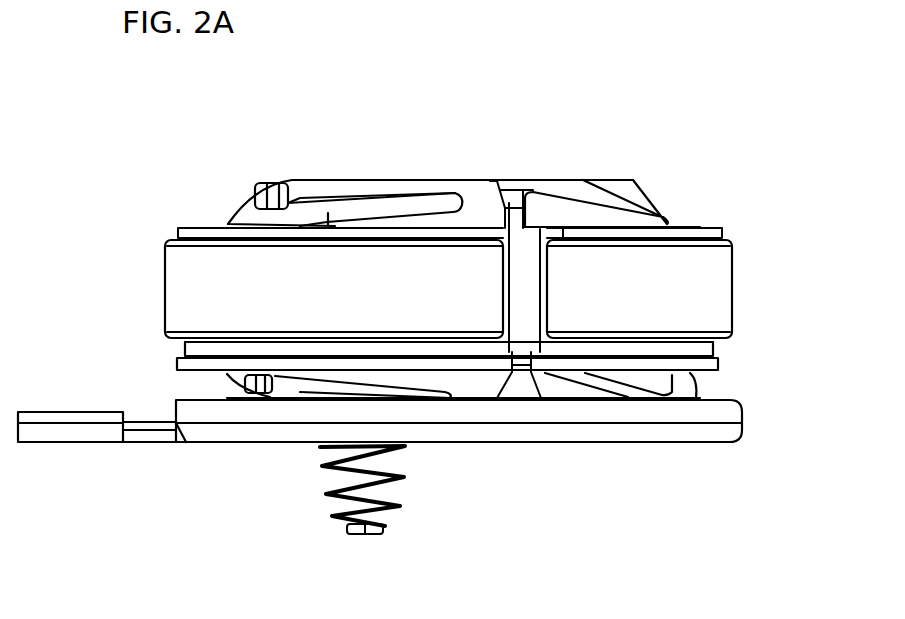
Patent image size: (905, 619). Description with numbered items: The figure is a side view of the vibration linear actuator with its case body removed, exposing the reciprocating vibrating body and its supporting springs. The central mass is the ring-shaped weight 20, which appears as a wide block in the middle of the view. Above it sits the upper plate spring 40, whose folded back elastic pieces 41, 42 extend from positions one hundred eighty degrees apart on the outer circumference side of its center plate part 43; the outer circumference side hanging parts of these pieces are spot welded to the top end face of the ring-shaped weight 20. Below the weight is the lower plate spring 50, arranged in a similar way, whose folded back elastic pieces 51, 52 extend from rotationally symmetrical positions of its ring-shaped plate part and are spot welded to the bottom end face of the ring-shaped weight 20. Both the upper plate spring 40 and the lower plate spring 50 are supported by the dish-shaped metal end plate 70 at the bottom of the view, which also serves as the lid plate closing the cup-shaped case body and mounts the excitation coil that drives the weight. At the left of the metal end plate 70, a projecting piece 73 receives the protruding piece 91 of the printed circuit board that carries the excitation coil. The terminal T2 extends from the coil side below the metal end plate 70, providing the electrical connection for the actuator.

The ring-shaped weight 20 is at (736, 300).
The upper plate spring 40 is at (368, 178).
The folded back elastic piece 41 is at (702, 231).
The folded back elastic piece 42 is at (220, 231).
The center plate part 43 is at (440, 180).
The lower plate spring 50 is at (718, 368).
The folded back elastic piece 51 is at (635, 340).
The folded back elastic piece 52 is at (297, 357).
The metal end plate 70 is at (595, 444).
The projecting piece 73 is at (77, 434).
The protruding piece 91 is at (145, 422).
The spring terminal T2 is at (378, 532).